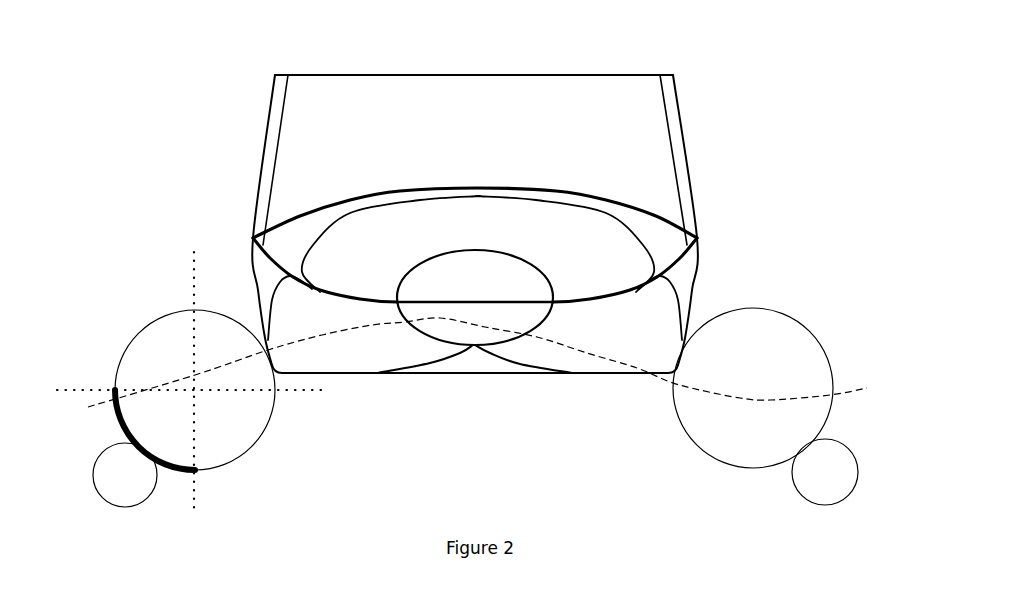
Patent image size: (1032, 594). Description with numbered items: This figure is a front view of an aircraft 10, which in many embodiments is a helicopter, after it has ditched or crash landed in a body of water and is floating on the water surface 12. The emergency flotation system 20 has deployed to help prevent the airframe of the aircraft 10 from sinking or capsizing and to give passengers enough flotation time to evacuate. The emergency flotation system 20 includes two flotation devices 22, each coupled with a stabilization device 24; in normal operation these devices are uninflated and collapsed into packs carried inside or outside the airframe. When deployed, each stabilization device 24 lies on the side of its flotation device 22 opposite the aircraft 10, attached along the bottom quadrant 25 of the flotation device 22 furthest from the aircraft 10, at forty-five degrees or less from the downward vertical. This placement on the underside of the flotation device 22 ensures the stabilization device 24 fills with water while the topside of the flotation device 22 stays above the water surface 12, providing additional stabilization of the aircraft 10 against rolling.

The aircraft 10 is at (188, 111).
The water surface 12 is at (858, 388).
The emergency flotation system 20 is at (470, 363).
The flotation device 22 is at (149, 320).
The stabilization device 24 is at (108, 448).
The bottom quadrant 25 is at (178, 474).